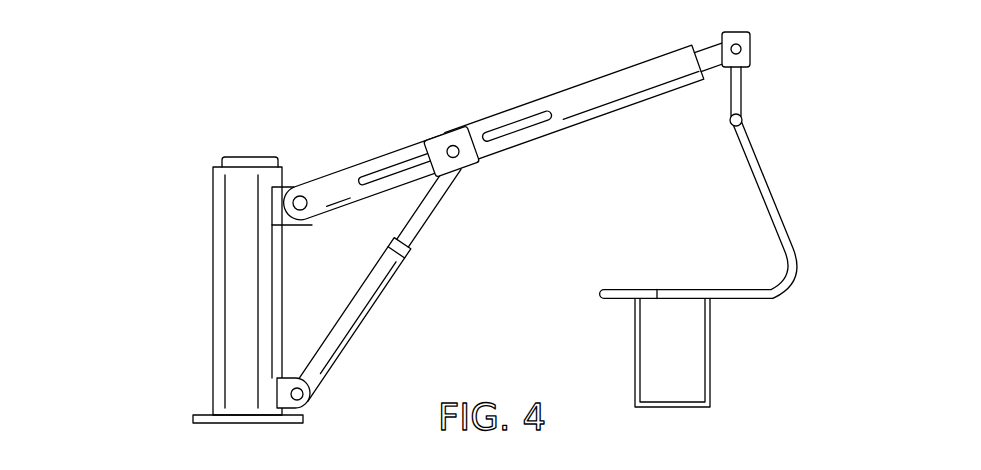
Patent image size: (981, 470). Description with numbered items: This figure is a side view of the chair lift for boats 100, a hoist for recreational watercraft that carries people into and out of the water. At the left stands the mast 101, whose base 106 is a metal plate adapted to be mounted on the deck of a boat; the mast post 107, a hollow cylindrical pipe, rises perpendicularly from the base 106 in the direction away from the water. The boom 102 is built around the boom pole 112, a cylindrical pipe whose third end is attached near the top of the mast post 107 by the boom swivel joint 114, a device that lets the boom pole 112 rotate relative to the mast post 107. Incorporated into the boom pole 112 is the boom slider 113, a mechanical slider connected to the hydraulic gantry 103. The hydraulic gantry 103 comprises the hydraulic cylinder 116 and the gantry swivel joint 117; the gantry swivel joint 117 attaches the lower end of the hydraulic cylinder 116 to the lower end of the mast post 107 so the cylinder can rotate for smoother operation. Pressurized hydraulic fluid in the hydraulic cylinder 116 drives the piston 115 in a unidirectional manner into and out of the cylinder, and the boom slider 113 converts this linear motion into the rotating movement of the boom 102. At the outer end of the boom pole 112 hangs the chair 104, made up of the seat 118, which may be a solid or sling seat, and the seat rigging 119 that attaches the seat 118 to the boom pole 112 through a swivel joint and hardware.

The chair lift for boats 100 is at (128, 114).
The mast 101 is at (213, 258).
The boom 102 is at (346, 172).
The hydraulic gantry 103 is at (395, 278).
The chair 104 is at (778, 293).
The base 106 is at (303, 420).
The mast post 107 is at (232, 303).
The boom pole 112 is at (572, 88).
The boom slider 113 is at (512, 130).
The boom swivel joint 114 is at (300, 192).
The piston 115 is at (442, 208).
The hydraulic cylinder 116 is at (362, 320).
The gantry swivel joint 117 is at (310, 398).
The seat 118 is at (640, 355).
The seat rigging 119 is at (742, 77).